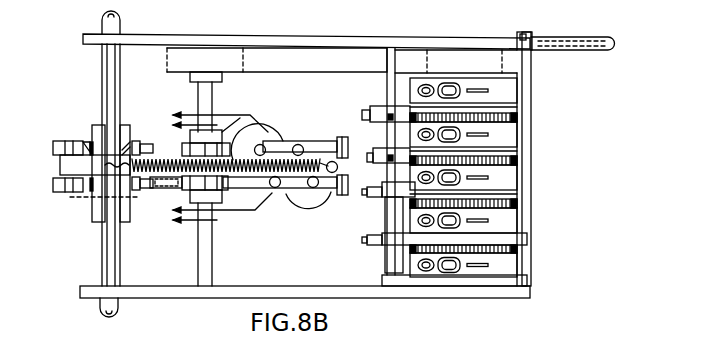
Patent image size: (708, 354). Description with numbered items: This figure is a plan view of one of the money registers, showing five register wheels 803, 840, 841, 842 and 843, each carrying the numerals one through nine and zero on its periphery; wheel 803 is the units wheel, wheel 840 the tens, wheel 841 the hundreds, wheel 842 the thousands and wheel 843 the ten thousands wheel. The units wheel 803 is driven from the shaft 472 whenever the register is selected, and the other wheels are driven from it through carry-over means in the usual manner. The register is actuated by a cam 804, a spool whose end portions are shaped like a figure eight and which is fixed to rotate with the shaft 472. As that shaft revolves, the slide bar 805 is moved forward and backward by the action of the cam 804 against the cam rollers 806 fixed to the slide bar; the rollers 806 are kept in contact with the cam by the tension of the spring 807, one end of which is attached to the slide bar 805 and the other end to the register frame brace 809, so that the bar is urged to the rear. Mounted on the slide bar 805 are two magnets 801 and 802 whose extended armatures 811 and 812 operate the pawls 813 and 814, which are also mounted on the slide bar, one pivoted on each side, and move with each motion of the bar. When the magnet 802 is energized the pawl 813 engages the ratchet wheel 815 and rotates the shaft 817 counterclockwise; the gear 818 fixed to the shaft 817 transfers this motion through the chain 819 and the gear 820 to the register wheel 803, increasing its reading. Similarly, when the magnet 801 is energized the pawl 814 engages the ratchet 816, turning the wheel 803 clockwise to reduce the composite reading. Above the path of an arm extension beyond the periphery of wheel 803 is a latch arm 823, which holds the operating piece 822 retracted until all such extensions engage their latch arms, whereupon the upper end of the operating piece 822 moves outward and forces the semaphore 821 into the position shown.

The shaft 472 is at (118, 30).
The chain 819 is at (275, 35).
The gear 820 is at (435, 50).
The semaphore 821 is at (614, 42).
The gear 818 is at (167, 61).
The register frame brace 809 is at (102, 74).
The units wheel 803 is at (517, 93).
The tens wheel 840 is at (517, 131).
The operating piece 822 is at (531, 172).
The hundreds wheel 841 is at (517, 182).
The thousands wheel 842 is at (517, 216).
The latch arm 823 is at (527, 239).
The ten thousands wheel 843 is at (517, 260).
The shaft 817 is at (198, 101).
The ratchet 816 is at (211, 130).
The pawl 814 is at (190, 142).
The ratchet wheel 815 is at (216, 203).
The armature 811 is at (245, 190).
The pawl 813 is at (168, 188).
The magnet 801 is at (262, 143).
The armature 812 is at (316, 142).
The magnet 802 is at (298, 189).
The spring 807 is at (320, 178).
The slide bar 805 is at (60, 161).
The cam 804 is at (88, 142).
The cam rollers 806 is at (124, 141).